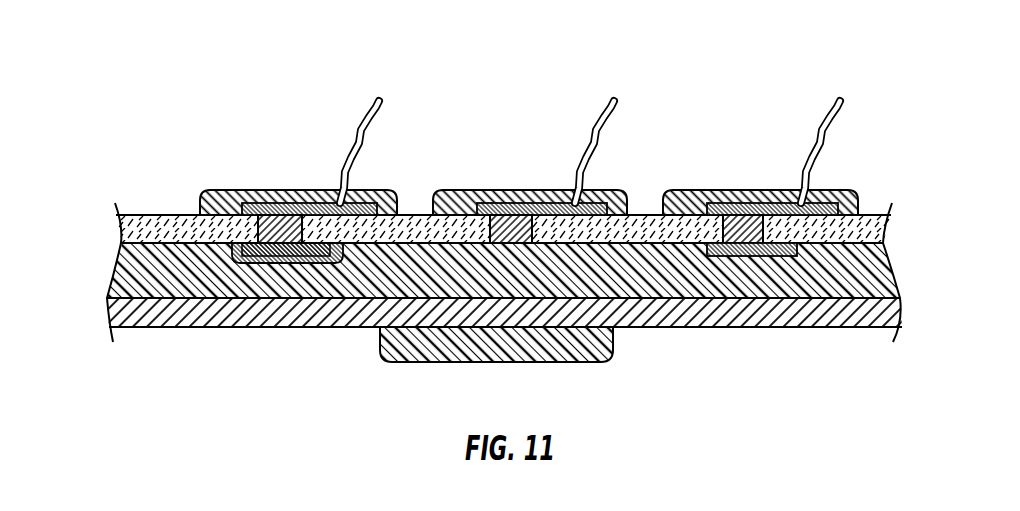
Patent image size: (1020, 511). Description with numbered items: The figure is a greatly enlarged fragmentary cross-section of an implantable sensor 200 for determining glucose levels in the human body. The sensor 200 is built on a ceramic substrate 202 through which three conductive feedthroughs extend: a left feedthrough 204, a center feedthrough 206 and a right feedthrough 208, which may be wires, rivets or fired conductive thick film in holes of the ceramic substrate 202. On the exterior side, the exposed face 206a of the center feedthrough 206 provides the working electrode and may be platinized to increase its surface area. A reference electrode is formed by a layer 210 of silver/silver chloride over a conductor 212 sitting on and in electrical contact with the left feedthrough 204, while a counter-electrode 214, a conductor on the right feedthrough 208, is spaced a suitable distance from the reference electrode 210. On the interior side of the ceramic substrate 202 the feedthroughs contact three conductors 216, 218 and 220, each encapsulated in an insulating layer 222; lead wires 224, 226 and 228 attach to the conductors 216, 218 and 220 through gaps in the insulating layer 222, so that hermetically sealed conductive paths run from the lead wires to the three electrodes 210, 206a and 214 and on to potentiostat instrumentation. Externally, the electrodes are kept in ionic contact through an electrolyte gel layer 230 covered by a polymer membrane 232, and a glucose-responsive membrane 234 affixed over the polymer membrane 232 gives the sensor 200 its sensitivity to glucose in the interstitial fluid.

The implantable sensor 200 is at (464, 249).
The ceramic substrate 202 is at (152, 222).
The left feedthrough 204 is at (279, 233).
The center feedthrough 206 is at (520, 233).
The exposed face 206a is at (509, 245).
The right feedthrough 208 is at (742, 233).
The reference electrode 210 is at (254, 267).
The conductor 212 is at (301, 266).
The counter-electrode 214 is at (769, 266).
The conductor 216 is at (285, 196).
The conductor 218 is at (517, 196).
The conductor 220 is at (748, 196).
The insulating layer 222 is at (227, 190).
The lead wire 224 is at (357, 127).
The lead wire 226 is at (593, 125).
The lead wire 228 is at (827, 123).
The electrolyte gel layer 230 is at (613, 287).
The polymer membrane 232 is at (853, 328).
The glucose-responsive membrane 234 is at (412, 355).